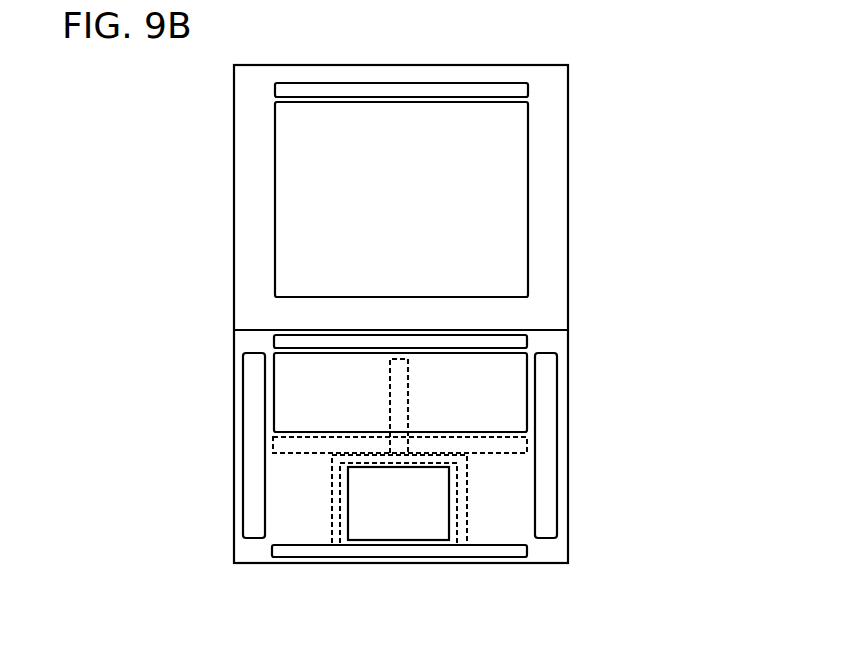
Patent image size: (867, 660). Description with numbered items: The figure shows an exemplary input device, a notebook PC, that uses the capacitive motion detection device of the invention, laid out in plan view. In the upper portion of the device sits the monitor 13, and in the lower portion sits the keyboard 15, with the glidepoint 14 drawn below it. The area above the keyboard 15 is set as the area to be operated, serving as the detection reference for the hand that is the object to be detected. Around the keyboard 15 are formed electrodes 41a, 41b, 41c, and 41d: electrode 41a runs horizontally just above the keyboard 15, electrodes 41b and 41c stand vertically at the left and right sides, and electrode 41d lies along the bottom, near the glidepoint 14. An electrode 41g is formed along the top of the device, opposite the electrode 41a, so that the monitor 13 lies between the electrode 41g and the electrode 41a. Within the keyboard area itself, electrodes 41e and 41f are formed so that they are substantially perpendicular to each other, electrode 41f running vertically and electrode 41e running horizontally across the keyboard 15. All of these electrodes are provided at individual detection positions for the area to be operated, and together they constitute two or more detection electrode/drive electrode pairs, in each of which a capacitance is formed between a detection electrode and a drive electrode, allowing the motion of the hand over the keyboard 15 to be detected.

The electrode 41g is at (427, 90).
The monitor 13 is at (500, 165).
The electrode 41a is at (503, 343).
The keyboard 15 is at (507, 415).
The electrode 41b is at (253, 498).
The electrode 41c is at (545, 388).
The electrode 41f is at (393, 398).
The electrode 41e is at (522, 447).
The electrode 41d is at (465, 550).
The glidepoint 14 is at (388, 522).